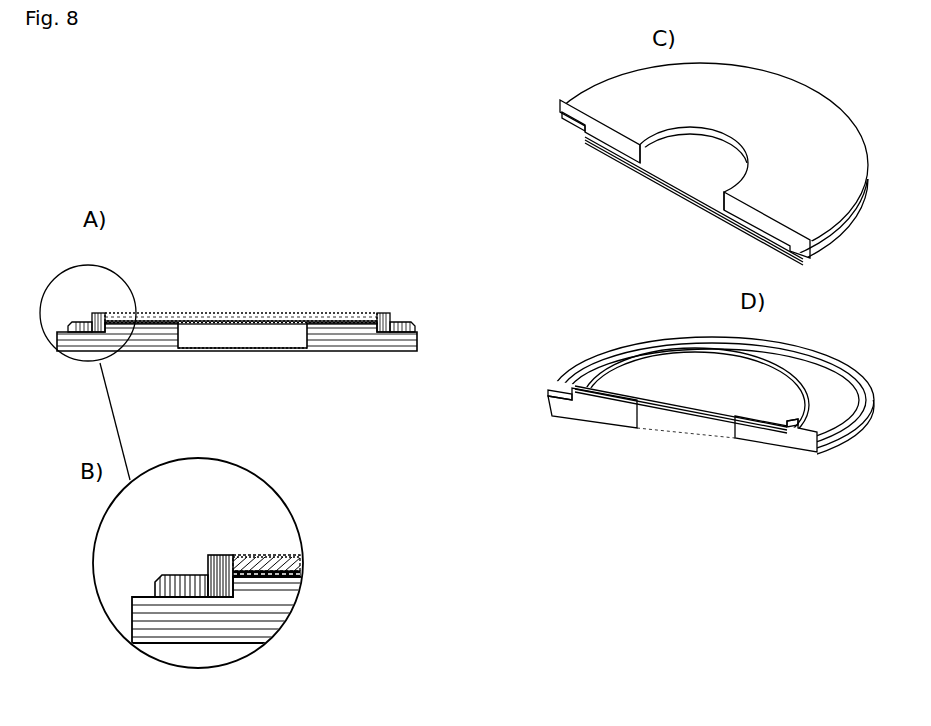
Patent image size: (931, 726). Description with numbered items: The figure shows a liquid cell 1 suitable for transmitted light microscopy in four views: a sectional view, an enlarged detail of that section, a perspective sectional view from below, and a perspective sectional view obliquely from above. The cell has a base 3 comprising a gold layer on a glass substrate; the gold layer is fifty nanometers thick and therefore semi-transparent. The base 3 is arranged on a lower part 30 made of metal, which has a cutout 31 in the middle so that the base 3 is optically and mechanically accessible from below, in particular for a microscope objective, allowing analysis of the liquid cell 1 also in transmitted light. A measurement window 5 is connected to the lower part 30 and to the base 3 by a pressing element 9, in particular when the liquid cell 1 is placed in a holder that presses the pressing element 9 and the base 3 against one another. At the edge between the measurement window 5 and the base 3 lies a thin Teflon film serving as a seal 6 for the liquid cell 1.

The liquid cell 1 is at (348, 162).
The base 3 is at (220, 323).
The measurement window 5 is at (268, 313).
The seal 6 is at (366, 313).
The pressing element 9 is at (173, 577).
The lower part 30 is at (800, 280).
The cutout 31 is at (205, 338).